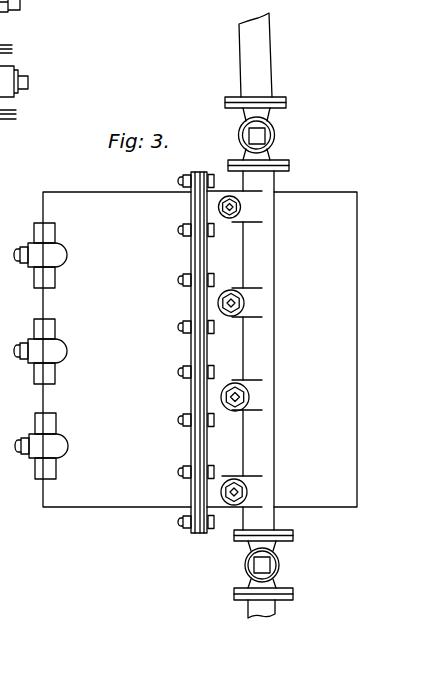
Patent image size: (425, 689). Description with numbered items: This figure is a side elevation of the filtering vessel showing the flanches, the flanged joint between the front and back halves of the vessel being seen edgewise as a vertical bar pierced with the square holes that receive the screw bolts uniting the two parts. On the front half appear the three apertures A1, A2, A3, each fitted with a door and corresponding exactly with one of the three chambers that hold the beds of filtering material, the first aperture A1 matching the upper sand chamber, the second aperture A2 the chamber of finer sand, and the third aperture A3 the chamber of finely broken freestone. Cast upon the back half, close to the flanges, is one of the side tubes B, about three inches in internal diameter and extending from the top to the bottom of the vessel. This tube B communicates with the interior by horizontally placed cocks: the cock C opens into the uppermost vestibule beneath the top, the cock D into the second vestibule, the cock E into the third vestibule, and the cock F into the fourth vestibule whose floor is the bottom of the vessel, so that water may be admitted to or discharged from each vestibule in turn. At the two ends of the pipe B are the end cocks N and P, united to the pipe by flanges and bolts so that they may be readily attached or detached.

The aperture A1 is at (37, 255).
The aperture A2 is at (37, 350).
The aperture A3 is at (39, 446).
The tube B is at (250, 331).
The cock C is at (240, 207).
The cock D is at (238, 303).
The cock E is at (241, 397).
The cock F is at (222, 471).
The cock N is at (261, 92).
The cock P is at (263, 574).